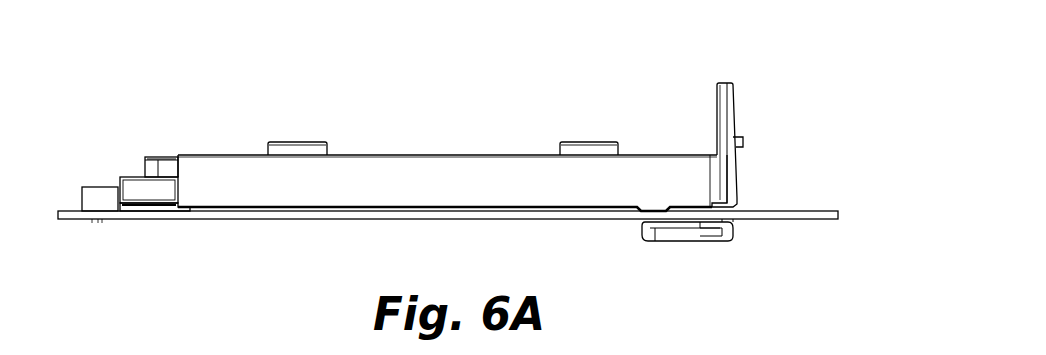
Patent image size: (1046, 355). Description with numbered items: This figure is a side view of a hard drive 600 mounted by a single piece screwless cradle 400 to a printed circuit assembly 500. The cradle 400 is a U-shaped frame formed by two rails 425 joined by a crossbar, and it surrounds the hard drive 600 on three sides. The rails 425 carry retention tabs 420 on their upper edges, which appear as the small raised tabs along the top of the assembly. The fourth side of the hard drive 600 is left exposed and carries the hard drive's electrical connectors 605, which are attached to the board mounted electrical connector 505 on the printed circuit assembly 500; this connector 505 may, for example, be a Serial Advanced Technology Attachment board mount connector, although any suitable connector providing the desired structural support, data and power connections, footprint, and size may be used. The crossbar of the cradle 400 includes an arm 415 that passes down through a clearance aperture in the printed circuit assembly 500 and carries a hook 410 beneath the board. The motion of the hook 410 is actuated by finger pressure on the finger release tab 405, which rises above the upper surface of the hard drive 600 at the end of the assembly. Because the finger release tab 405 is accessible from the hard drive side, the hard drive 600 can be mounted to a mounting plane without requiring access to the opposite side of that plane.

The cradle 400 is at (460, 163).
The finger release tab 405 is at (717, 110).
The hook 410 is at (647, 235).
The arm 415 is at (700, 235).
The retention tabs 420 is at (297, 148).
The rails 425 is at (412, 172).
The printed circuit assembly 500 is at (143, 210).
The board mounted electrical connector 505 is at (95, 202).
The hard drive 600 is at (170, 168).
The hard drive electrical connectors 605 is at (142, 187).